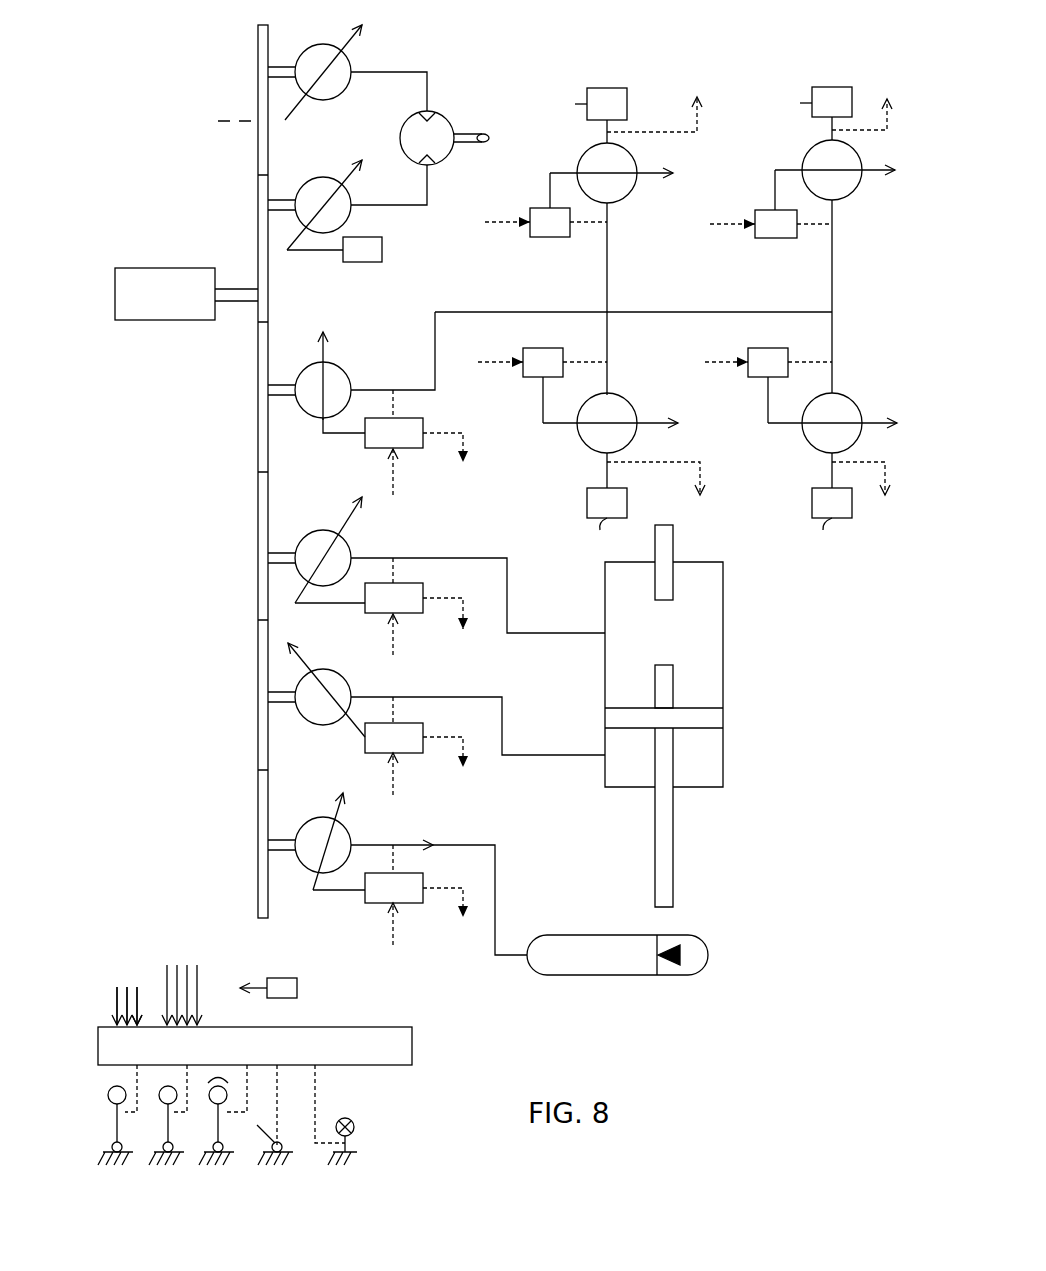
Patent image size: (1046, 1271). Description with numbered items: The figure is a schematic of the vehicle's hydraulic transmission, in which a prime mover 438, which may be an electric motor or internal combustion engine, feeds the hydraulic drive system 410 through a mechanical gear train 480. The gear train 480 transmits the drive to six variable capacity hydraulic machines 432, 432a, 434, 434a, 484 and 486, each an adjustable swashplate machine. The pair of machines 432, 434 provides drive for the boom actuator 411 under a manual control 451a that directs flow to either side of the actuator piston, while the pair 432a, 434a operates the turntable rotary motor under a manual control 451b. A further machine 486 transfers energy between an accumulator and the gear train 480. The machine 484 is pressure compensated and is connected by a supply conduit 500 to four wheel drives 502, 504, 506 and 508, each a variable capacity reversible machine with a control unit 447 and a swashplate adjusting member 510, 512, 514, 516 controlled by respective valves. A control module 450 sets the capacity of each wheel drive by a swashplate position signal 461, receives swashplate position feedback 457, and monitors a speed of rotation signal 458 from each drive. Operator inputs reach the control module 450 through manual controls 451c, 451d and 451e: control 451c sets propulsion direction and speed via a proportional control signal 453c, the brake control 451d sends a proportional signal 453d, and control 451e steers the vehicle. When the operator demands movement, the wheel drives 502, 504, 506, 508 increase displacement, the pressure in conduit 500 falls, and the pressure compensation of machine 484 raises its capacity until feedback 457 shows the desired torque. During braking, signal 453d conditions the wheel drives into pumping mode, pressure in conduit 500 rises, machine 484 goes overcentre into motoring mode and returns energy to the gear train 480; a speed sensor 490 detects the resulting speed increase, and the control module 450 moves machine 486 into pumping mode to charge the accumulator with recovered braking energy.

The hydraulic drive system 410 is at (350, 94).
The boom actuator 411 is at (615, 675).
The variable capacity hydraulic machine 432 is at (350, 512).
The variable capacity hydraulic machine 432a is at (358, 53).
The variable capacity hydraulic machine 434 is at (305, 668).
The variable capacity hydraulic machine 434a is at (312, 177).
The prime mover 438 is at (128, 322).
The control valve 447 is at (565, 250).
The control module 450 is at (112, 1050).
The manual control 451a is at (108, 1093).
The manual control 451b is at (162, 1134).
The manual control 451c is at (222, 1130).
The brake control 451d is at (283, 1150).
The manual control 451e is at (356, 1155).
The control signal 453c is at (245, 1075).
The proportional signal 453d is at (277, 1103).
The swashplate position feedback 457 is at (452, 462).
The speed of rotation signal 458 is at (666, 130).
The swashplate position signal 461 is at (506, 232).
The gear train 480 is at (254, 508).
The hydraulic machine 484 is at (346, 383).
The hydraulic machine 486 is at (348, 834).
The speed sensor 490 is at (280, 978).
The supply conduit 500 is at (435, 330).
The wheel drive 502 is at (592, 160).
The wheel drive 504 is at (817, 157).
The wheel drive 506 is at (590, 438).
The wheel drive 508 is at (815, 440).
The adjusting member 510 is at (645, 178).
The adjusting member 512 is at (868, 180).
The adjusting member 514 is at (650, 420).
The adjusting member 516 is at (868, 420).